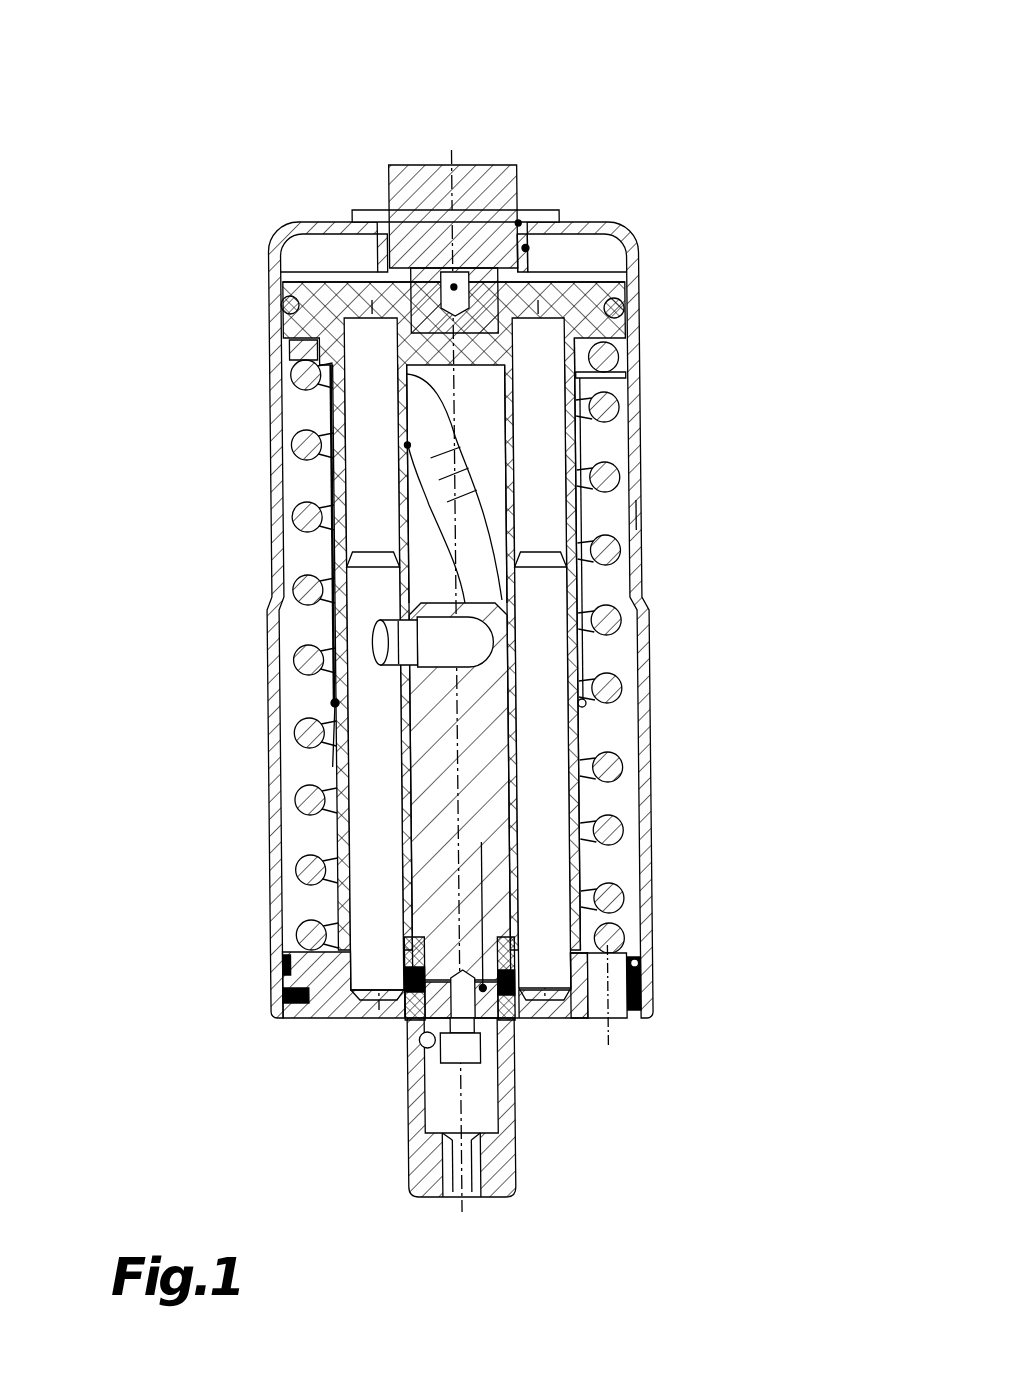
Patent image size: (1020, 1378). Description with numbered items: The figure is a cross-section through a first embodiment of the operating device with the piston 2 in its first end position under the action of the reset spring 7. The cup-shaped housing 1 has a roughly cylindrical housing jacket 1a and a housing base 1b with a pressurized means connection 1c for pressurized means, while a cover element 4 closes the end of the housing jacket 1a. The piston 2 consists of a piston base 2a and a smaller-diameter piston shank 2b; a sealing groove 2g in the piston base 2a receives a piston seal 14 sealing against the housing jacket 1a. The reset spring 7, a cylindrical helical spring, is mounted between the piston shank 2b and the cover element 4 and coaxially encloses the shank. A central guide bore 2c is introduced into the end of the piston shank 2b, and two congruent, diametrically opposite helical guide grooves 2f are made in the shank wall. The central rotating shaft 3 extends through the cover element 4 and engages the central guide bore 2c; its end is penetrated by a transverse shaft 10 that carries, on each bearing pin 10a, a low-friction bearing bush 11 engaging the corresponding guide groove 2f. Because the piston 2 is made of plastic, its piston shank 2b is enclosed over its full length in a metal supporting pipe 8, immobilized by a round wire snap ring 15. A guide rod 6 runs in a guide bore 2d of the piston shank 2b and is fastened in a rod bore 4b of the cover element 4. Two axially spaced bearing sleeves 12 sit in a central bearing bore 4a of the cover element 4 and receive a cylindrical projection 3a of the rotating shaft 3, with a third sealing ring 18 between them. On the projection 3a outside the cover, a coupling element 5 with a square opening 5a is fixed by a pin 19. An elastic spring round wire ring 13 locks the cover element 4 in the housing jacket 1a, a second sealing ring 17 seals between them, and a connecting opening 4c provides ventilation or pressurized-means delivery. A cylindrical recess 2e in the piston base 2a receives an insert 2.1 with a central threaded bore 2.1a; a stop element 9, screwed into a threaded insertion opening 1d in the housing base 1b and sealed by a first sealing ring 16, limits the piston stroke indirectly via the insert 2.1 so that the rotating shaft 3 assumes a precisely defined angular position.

The housing 1 is at (650, 483).
The housing jacket 1a is at (634, 515).
The housing base 1b is at (586, 228).
The pressurized means connection 1c is at (235, 184).
The threaded insertion opening 1d is at (594, 194).
The piston 2 is at (575, 323).
The insert 2.1 is at (603, 283).
The central threaded bore 2.1a is at (684, 136).
The piston base 2a is at (584, 376).
The piston shank 2b is at (580, 425).
The central guide bore 2c is at (457, 430).
The guide bore 2d is at (374, 378).
The cylindrical recess 2e is at (296, 340).
The helical guide grooves 2f is at (424, 517).
The sealing groove 2g is at (293, 303).
The rotating shaft 3 is at (471, 733).
The cylindrical projection 3a is at (479, 842).
The cover element 4 is at (321, 977).
The central bearing bore 4a is at (408, 997).
The rod bore 4b is at (227, 913).
The connecting opening 4c is at (603, 987).
The coupling element 5 is at (503, 1103).
The square opening 5a is at (469, 1170).
The guide rod 6 is at (539, 678).
The reset spring 7 is at (606, 548).
The supporting pipe 8 is at (334, 420).
The stop element 9 is at (434, 195).
The transverse shaft 10 is at (334, 703).
The bearing pin 10a is at (462, 653).
The bearing bush 11 is at (373, 642).
The bearing sleeves 12 is at (514, 945).
The elastic spring round wire ring 13 is at (279, 997).
The piston seal 14 is at (618, 308).
The round wire snap ring 15 is at (331, 762).
The first sealing ring 16 is at (586, 113).
The second sealing ring 17 is at (631, 963).
The third sealing ring 18 is at (599, 1030).
The pin 19 is at (436, 1042).